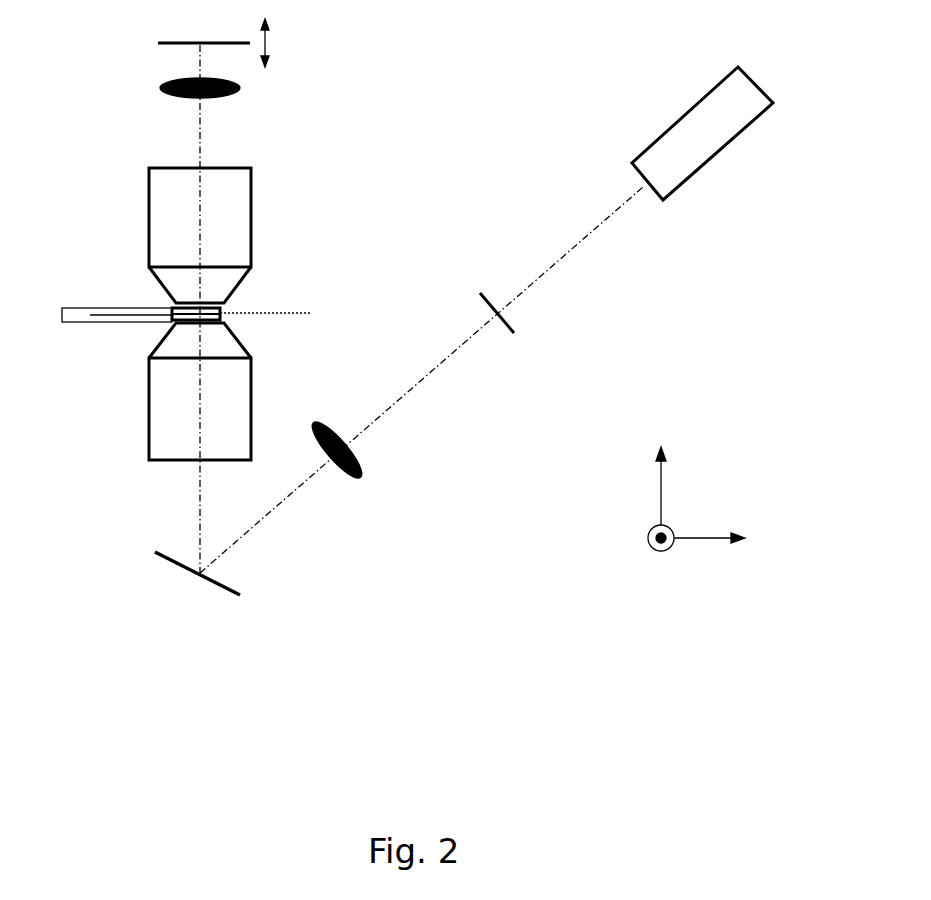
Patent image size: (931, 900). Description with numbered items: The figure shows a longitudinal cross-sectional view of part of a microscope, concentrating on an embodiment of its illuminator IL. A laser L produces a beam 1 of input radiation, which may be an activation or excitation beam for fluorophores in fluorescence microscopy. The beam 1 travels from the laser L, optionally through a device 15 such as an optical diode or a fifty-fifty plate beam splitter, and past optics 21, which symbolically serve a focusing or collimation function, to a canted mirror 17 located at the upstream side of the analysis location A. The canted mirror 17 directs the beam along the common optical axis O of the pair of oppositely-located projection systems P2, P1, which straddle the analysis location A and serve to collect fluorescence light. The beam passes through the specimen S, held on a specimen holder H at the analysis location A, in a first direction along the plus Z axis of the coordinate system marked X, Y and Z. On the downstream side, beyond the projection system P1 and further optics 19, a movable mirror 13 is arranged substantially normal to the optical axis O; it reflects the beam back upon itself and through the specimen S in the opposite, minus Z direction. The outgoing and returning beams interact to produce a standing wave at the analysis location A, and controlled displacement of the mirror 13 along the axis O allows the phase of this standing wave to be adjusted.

The beam 1 is at (585, 237).
The movable mirror 13 is at (231, 48).
The optical diode 15 is at (503, 325).
The canted mirror 17 is at (160, 558).
The optics 19 is at (172, 82).
The optics 21 is at (340, 462).
The analysis location A is at (262, 302).
The specimen holder H is at (68, 312).
The illuminator IL is at (525, 643).
The laser L is at (675, 170).
The optical axis O is at (203, 130).
The projection system P1 is at (163, 218).
The projection system P2 is at (162, 437).
The specimen S is at (222, 313).
The X axis X is at (650, 558).
The Y axis Y is at (710, 562).
The Z axis Z is at (645, 478).